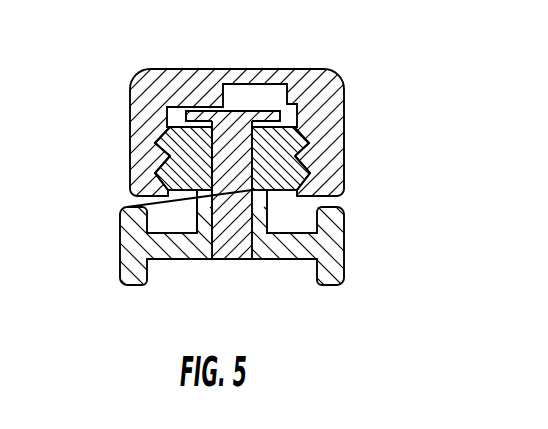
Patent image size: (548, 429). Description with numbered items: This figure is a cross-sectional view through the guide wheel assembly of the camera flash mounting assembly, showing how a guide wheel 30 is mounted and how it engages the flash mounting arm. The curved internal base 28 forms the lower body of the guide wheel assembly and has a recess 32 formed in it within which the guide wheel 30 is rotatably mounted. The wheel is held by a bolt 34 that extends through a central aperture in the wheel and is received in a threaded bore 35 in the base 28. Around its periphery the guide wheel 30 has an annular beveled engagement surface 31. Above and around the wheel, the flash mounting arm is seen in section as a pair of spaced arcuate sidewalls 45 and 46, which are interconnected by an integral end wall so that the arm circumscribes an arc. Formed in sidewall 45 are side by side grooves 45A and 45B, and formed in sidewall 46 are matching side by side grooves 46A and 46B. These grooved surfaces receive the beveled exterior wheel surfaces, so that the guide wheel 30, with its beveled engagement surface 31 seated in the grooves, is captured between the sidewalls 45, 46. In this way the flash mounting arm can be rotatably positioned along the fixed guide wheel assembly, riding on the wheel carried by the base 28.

The curved internal base 28 is at (331, 241).
The guide wheel 30 is at (326, 76).
The annular beveled engagement surface 31 is at (330, 139).
The recess 32 is at (302, 236).
The bolt 34 is at (238, 121).
The threaded bore 35 is at (212, 232).
The arcuate sidewall 45 is at (148, 151).
The groove 45A is at (160, 138).
The groove 45B is at (164, 193).
The arcuate sidewall 46 is at (322, 134).
The groove 46A is at (303, 131).
The groove 46B is at (309, 176).